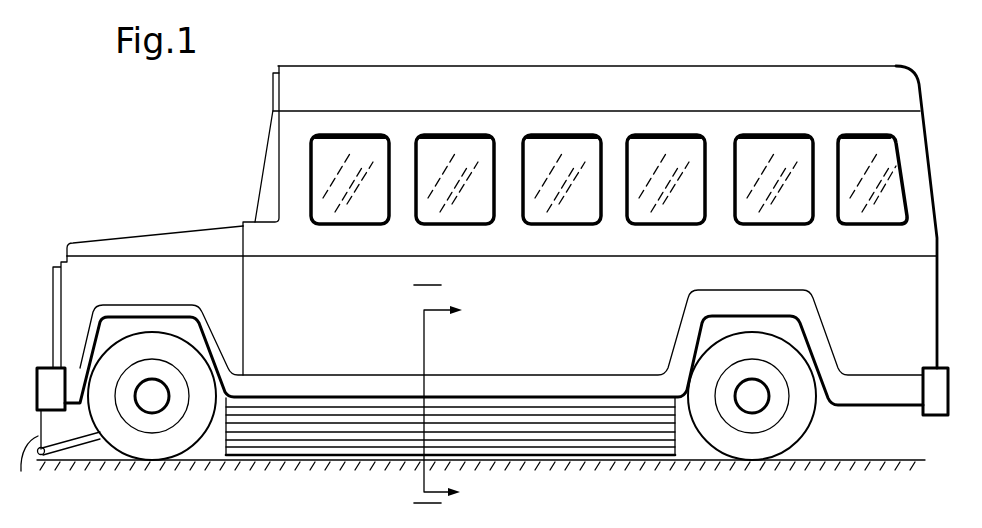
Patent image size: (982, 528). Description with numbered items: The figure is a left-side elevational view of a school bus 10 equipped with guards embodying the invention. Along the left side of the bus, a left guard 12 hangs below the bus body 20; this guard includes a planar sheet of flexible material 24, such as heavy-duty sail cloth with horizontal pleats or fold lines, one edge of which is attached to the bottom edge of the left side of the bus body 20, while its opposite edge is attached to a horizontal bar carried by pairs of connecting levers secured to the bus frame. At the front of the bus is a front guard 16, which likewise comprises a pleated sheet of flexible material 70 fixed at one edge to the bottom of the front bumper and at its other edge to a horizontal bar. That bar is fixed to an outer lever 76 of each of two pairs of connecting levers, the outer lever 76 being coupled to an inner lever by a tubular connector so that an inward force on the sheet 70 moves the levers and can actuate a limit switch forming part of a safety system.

The school bus 10 is at (210, 178).
The left guard 12 is at (694, 456).
The front guard 16 is at (81, 462).
The bus body 20 is at (184, 242).
The planar sheet of flexible material 24 is at (549, 442).
The sheet of flexible material 70 is at (32, 468).
The outer lever 76 is at (97, 438).